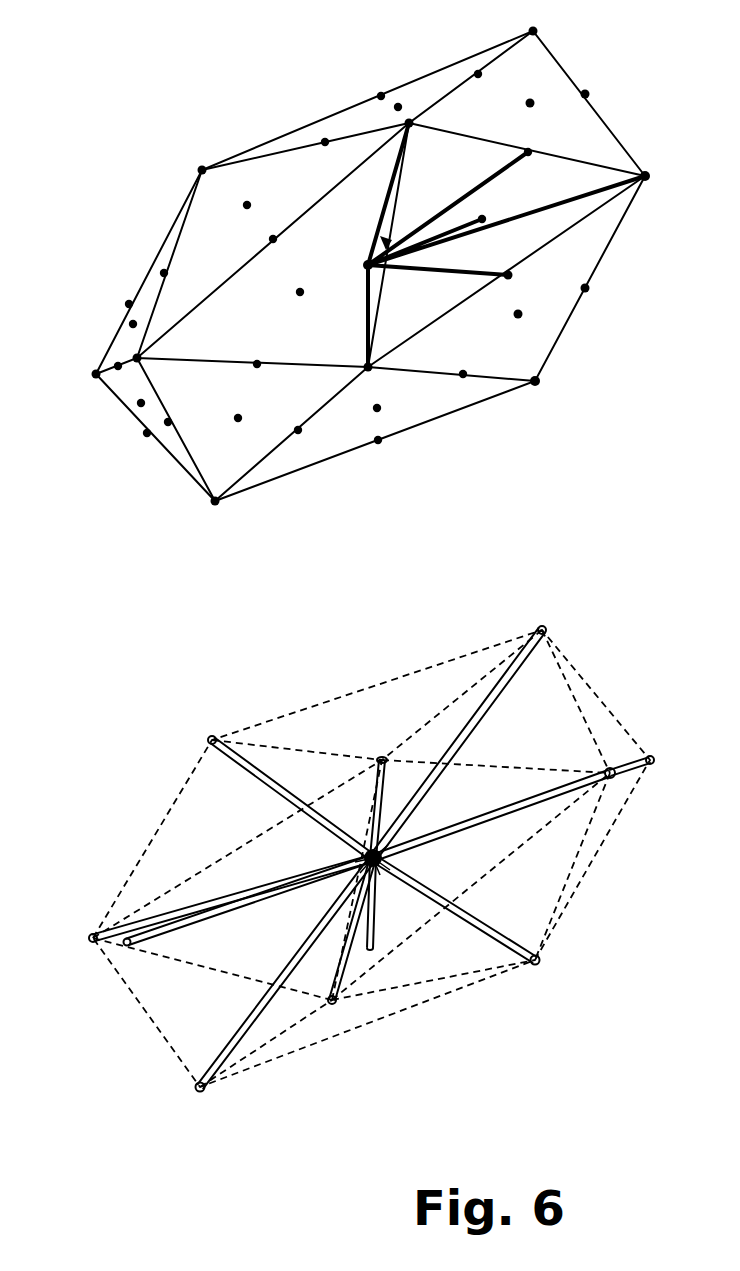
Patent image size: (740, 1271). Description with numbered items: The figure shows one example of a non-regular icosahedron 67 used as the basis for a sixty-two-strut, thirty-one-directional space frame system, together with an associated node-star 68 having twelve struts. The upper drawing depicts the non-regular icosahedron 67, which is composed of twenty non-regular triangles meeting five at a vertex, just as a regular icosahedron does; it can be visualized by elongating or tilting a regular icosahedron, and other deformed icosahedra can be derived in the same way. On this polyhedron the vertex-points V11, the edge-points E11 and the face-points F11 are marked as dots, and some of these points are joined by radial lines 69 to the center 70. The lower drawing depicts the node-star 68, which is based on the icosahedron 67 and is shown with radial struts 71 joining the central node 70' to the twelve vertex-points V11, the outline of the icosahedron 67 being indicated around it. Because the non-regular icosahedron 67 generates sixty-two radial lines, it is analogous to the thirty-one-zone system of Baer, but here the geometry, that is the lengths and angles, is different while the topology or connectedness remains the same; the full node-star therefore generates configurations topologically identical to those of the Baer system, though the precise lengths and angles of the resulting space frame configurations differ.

The non-regular icosahedron 67 is at (115, 506).
The node-star 68 is at (339, 890).
The radial lines 69 is at (382, 207).
The center 70 is at (344, 296).
The central node 70' is at (391, 888).
The radial struts 71 is at (486, 725).
The edge-points E11 is at (592, 90).
The face-points F11 is at (532, 96).
The vertex-points V11 is at (654, 173).